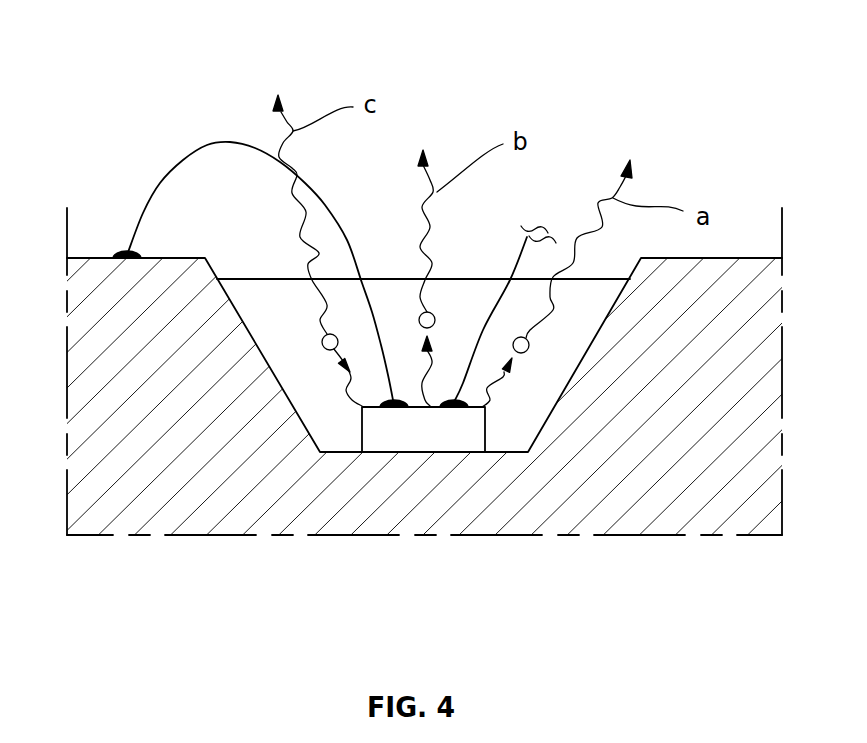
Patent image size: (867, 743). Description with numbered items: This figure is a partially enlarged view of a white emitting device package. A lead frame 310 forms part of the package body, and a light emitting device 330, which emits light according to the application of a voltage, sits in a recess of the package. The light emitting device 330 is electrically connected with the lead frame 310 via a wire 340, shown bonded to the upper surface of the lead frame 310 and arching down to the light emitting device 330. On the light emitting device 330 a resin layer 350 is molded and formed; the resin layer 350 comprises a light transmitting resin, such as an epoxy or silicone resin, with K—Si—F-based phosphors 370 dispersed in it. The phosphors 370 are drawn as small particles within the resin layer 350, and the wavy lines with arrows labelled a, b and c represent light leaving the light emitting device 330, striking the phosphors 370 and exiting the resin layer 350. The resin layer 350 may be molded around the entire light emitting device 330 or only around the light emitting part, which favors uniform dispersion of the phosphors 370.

The lead frame 310 is at (193, 508).
The light emitting device 330 is at (442, 432).
The wire 340 is at (167, 172).
The resin layer 350 is at (263, 303).
The K—Si—F-based phosphors 370 is at (436, 316).